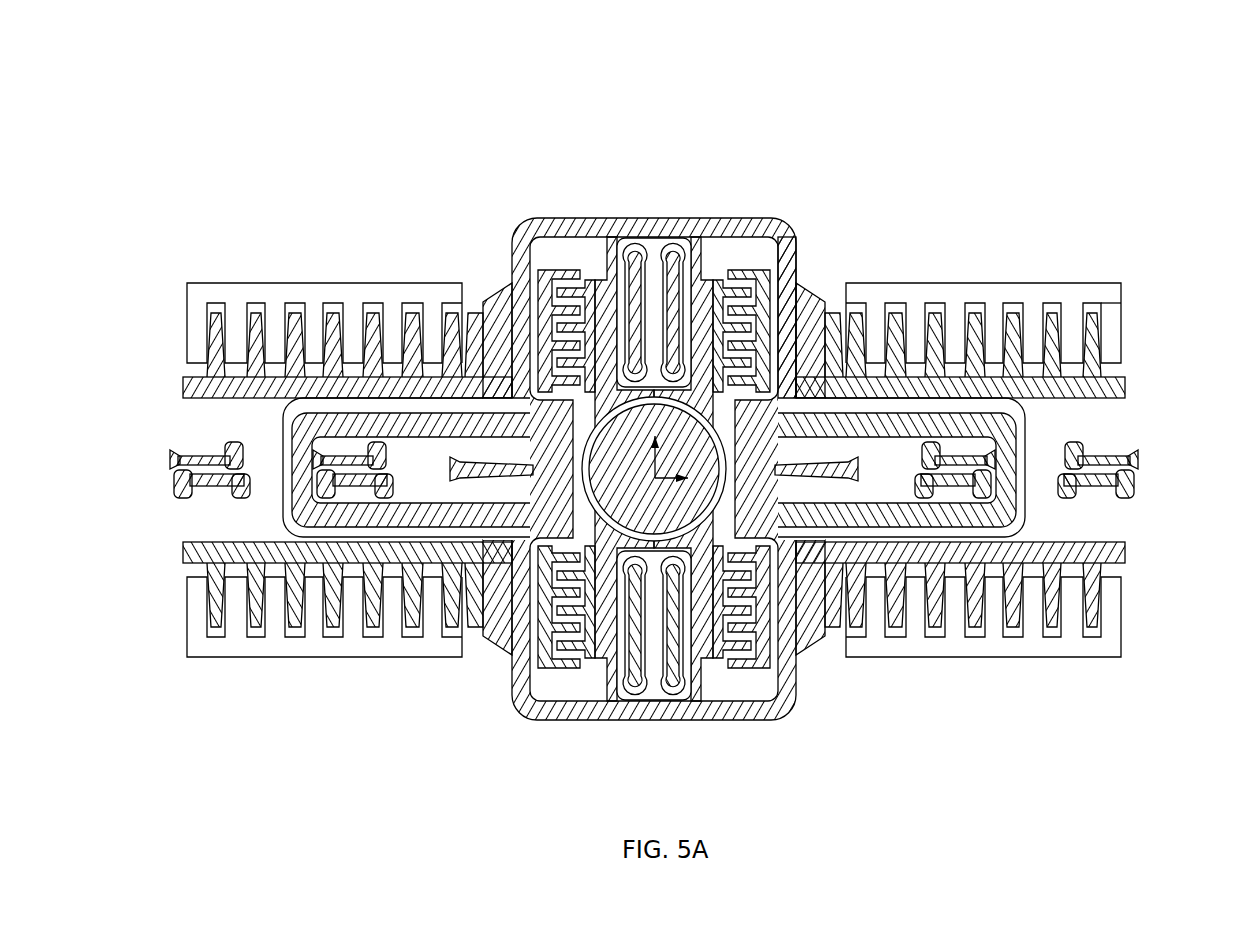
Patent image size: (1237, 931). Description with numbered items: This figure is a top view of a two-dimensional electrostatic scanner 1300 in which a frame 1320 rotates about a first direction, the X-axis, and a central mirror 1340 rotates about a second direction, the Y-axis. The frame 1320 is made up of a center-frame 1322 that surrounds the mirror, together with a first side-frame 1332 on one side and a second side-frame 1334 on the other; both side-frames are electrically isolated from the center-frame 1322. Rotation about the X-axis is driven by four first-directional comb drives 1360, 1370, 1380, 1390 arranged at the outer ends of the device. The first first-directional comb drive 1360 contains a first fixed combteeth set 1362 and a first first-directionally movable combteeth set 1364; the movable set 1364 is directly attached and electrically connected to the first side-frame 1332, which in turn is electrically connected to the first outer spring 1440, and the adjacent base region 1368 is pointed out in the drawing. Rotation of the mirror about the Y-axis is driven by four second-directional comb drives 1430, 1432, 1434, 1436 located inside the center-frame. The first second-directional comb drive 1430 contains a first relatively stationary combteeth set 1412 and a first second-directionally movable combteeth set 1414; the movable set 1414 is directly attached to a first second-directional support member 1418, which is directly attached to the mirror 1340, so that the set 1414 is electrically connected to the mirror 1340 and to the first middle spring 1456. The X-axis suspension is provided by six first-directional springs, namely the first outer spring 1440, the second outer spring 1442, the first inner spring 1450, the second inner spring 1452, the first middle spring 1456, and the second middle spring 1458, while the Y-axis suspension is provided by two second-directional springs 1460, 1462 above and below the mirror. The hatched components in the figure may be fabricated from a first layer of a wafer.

The two-dimensional electrostatic scanner 1300 is at (647, 437).
The frame 1320 is at (500, 250).
The center-frame 1322 is at (580, 237).
The first side-frame 1332 is at (994, 470).
The second side-frame 1334 is at (270, 412).
The mirror 1340 is at (697, 440).
The first first-directional comb drive 1360 is at (1038, 317).
The first fixed combteeth set 1362 is at (1124, 347).
The first first-directionally movable combteeth set 1364 is at (1108, 366).
The base plate 1368 is at (1118, 390).
The first-directional comb drive 1370 is at (178, 342).
The first-directional comb drive 1380 is at (176, 601).
The first-directional comb drive 1390 is at (1134, 606).
The first relatively stationary combteeth set 1412 is at (773, 283).
The first second-directionally movable combteeth set 1414 is at (731, 300).
The first second-directional support member 1418 is at (688, 285).
The first second-directional comb drive 1430 is at (735, 261).
The second-directional comb drive 1432 is at (558, 262).
The second-directional comb drive 1434 is at (564, 683).
The second-directional comb drive 1436 is at (738, 683).
The first outer spring 1440 is at (1130, 493).
The second outer spring 1442 is at (180, 493).
The first inner spring 1450 is at (808, 470).
The second inner spring 1452 is at (510, 470).
The first middle spring 1456 is at (988, 468).
The second middle spring 1458 is at (318, 468).
The second-directional spring 1460 is at (656, 245).
The second-directional spring 1462 is at (652, 680).